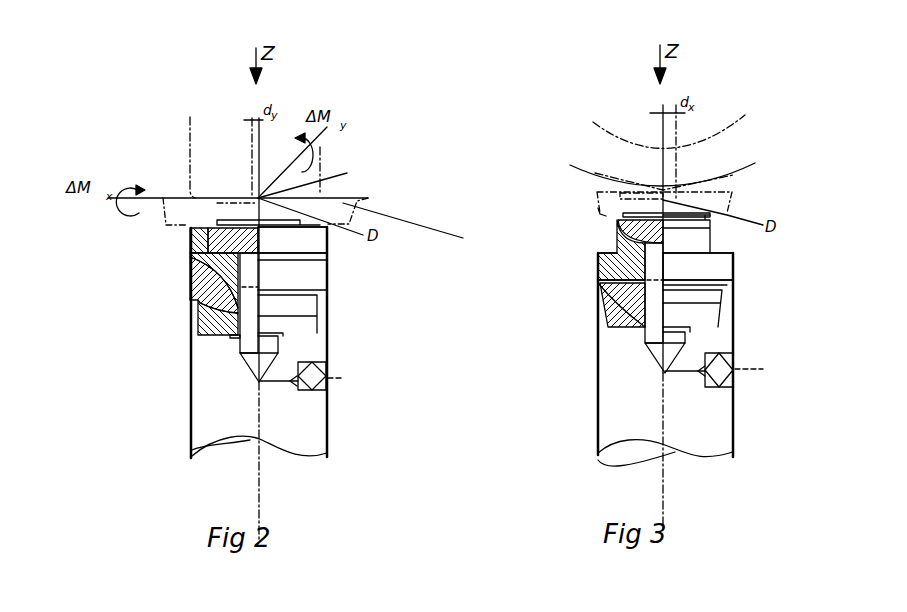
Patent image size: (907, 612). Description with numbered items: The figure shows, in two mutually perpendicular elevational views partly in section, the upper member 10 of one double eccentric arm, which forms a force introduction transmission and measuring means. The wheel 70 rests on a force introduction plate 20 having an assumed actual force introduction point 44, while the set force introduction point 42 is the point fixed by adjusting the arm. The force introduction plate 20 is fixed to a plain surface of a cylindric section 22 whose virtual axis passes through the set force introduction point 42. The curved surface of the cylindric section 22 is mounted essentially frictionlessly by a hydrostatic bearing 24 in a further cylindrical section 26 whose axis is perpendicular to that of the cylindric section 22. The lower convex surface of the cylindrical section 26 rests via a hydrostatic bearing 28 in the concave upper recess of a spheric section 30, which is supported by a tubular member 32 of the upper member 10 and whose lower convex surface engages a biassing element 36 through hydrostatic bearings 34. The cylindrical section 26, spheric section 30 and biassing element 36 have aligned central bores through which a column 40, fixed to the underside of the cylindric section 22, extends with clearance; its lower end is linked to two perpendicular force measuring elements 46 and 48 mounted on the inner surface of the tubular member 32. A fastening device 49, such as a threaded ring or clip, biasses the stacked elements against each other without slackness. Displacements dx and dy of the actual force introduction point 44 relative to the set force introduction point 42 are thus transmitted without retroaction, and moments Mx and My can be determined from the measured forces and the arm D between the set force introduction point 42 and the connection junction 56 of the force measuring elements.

In FIG. 3, the upper member 10 is at (542, 433).
In FIG. 2, the force introduction plate 20 is at (164, 216).
In FIG. 3, the force introduction plate 20 is at (600, 212).
In FIG. 2, the cylindric section 22 is at (212, 232).
In FIG. 3, the cylindric section 22 is at (618, 224).
In FIG. 2, the hydrostatic bearing 24 is at (208, 253).
In FIG. 2, the further cylindrical section 26 is at (200, 266).
In FIG. 3, the further cylindrical section 26 is at (600, 252).
In FIG. 3, the hydrostatic bearing 28 is at (597, 277).
In FIG. 2, the spheric section 30 is at (200, 283).
In FIG. 3, the spheric section 30 is at (597, 293).
In FIG. 2, the tubular member 32 is at (191, 391).
In FIG. 3, the tubular member 32 is at (735, 423).
In FIG. 2, the hydrostatic bearings 34 is at (203, 312).
In FIG. 3, the hydrostatic bearings 34 is at (597, 313).
In FIG. 2, the biassing element 36 is at (198, 329).
In FIG. 3, the biassing element 36 is at (645, 325).
In FIG. 2, the column 40 is at (250, 356).
In FIG. 2, the set force introduction point 42 is at (347, 173).
In FIG. 3, the set force introduction point 42 is at (645, 341).
In FIG. 2, the actual force introduction point 44 is at (258, 198).
In FIG. 3, the actual force introduction point 44 is at (747, 170).
In FIG. 2, the force measuring element 46 is at (297, 378).
In FIG. 3, the force measuring element 48 is at (730, 377).
In FIG. 2, the fastening device 49 is at (232, 338).
In FIG. 3, the connection junction 56 is at (663, 373).
In FIG. 2, the wheel 70 is at (215, 138).
In FIG. 3, the wheel 70 is at (735, 138).